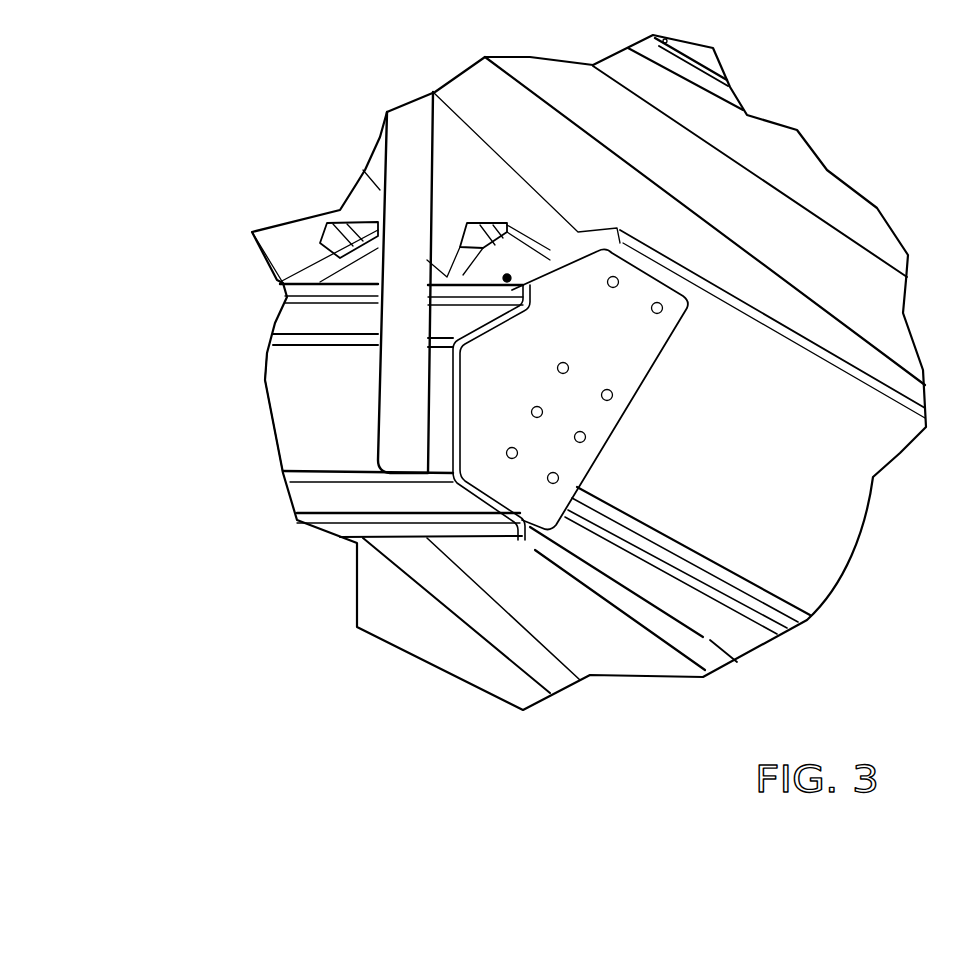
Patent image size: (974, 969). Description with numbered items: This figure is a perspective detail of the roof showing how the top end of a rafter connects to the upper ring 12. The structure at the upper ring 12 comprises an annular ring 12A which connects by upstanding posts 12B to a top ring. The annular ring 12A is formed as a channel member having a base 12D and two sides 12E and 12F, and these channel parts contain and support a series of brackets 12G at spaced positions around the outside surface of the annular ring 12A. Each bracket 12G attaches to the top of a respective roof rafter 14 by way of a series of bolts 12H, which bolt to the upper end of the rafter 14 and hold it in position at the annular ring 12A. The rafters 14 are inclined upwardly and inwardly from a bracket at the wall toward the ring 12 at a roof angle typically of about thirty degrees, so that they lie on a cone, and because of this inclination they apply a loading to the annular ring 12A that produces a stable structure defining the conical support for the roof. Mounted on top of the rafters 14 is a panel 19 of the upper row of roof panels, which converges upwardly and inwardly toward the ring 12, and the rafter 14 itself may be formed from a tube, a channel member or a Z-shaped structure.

The upper ring 12 is at (223, 403).
The annular ring 12A is at (297, 435).
The upstanding posts 12B is at (395, 230).
The base 12D is at (337, 448).
The side 12E is at (313, 318).
The side 12F is at (415, 504).
The bracket 12G is at (633, 362).
The bolts 12H is at (612, 398).
The roof rafter 14 is at (825, 498).
The panel 19 is at (817, 200).